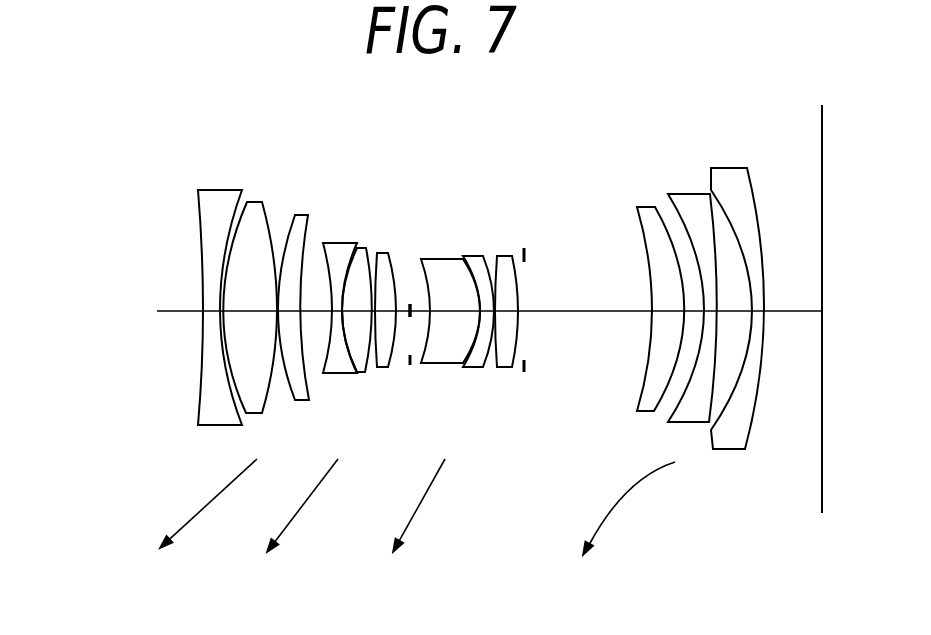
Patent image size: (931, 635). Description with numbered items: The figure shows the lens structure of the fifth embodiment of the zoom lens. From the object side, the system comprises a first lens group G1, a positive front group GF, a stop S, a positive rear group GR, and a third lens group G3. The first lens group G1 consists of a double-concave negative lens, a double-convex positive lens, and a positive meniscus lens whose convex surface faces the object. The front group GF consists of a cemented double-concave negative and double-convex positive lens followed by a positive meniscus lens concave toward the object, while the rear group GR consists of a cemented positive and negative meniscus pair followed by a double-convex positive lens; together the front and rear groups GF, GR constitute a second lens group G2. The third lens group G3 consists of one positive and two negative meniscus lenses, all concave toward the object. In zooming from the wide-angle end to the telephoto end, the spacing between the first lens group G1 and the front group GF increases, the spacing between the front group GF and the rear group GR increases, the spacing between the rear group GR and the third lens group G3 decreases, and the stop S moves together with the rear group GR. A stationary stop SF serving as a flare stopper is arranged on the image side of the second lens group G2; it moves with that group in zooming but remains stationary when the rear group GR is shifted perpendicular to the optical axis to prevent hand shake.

The first lens group G1 is at (313, 177).
The second lens group G2 is at (449, 227).
The third lens group G3 is at (753, 157).
The positive front group GF is at (393, 234).
The positive rear group GR is at (513, 240).
The stop S is at (410, 254).
The stationary stop SF is at (524, 252).